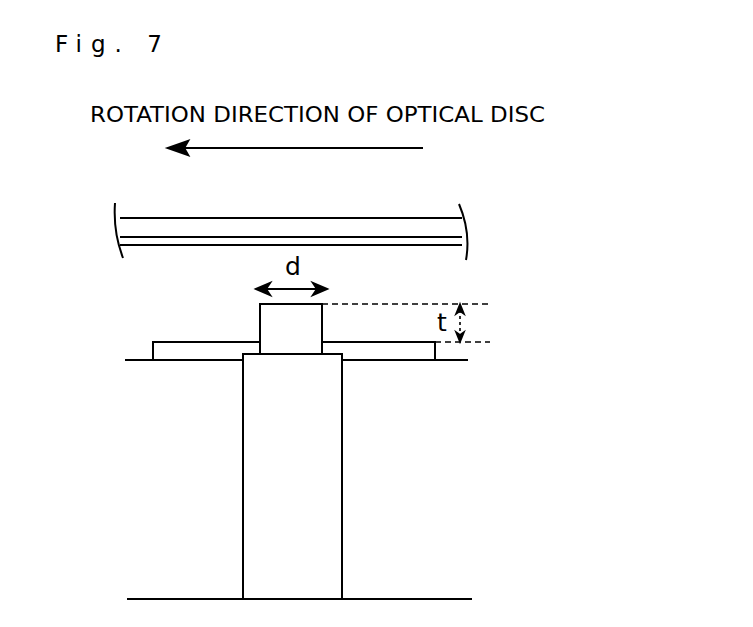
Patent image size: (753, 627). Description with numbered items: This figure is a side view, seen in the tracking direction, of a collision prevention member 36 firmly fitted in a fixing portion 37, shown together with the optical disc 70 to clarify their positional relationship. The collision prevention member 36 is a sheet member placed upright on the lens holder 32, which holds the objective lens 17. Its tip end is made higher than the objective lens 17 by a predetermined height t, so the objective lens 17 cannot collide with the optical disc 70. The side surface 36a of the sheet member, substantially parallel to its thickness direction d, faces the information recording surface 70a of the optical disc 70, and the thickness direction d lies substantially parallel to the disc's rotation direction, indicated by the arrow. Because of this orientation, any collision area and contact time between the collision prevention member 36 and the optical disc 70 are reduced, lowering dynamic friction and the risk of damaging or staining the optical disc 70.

The optical disc 70 is at (318, 217).
The information recording surface 70a is at (175, 236).
The collision prevention member 36 is at (273, 320).
The side surface 36a is at (317, 303).
The objective lens 17 is at (175, 345).
The fixing portion 37 is at (257, 465).
The lens holder 32 is at (412, 596).